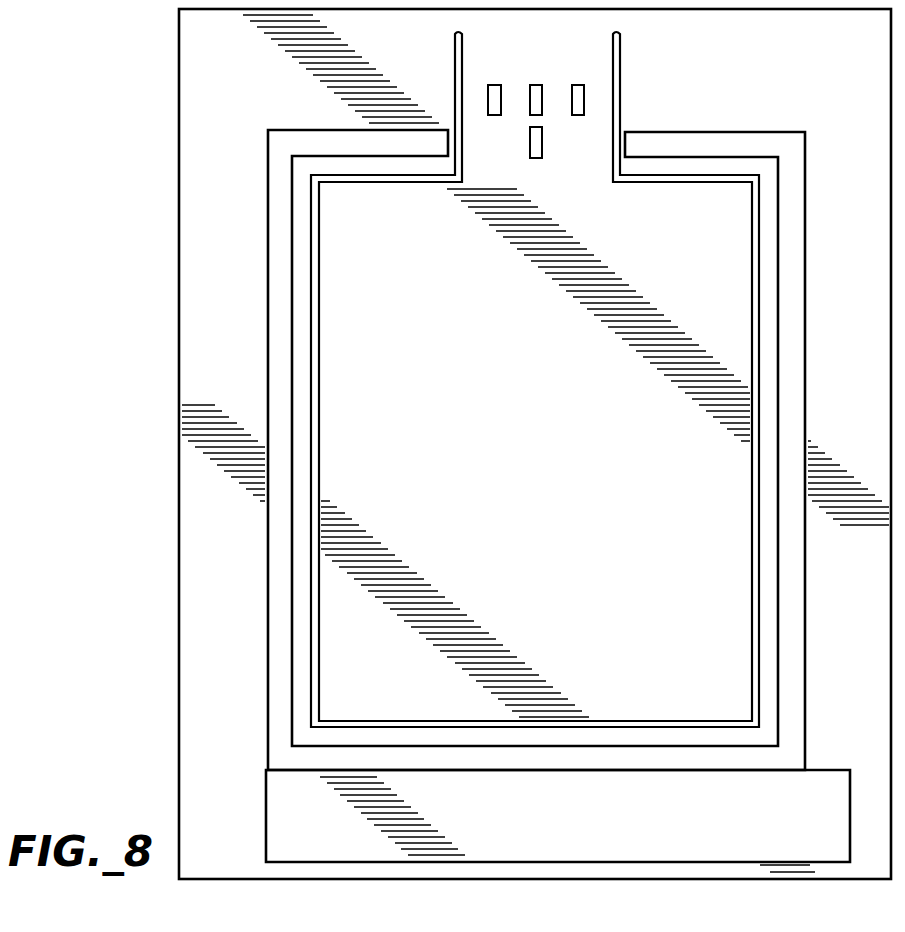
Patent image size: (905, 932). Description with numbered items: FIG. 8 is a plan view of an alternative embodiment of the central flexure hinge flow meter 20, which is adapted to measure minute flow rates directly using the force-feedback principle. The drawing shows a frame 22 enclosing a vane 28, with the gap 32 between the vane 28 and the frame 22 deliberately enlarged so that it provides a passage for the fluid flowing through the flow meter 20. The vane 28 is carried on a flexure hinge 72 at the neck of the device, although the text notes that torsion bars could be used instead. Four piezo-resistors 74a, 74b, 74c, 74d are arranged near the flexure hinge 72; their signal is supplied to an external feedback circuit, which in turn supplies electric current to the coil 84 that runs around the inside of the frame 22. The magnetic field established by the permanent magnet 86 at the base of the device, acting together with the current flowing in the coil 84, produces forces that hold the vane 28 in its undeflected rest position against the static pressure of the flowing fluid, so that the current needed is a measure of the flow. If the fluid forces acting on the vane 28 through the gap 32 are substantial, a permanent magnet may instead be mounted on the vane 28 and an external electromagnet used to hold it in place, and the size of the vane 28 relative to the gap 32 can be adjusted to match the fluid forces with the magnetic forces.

The flow meter 20 is at (156, 207).
The frame 22 is at (179, 320).
The gap 32 is at (271, 557).
The vane 28 is at (570, 426).
The coil 84 is at (398, 311).
The permanent magnet 86 is at (548, 831).
The flexure hinge 72 is at (565, 137).
The piezo-resistor 74a is at (528, 133).
The piezo-resistor 74b is at (492, 100).
The piezo-resistor 74c is at (613, 34).
The piezo-resistor 74d is at (583, 98).